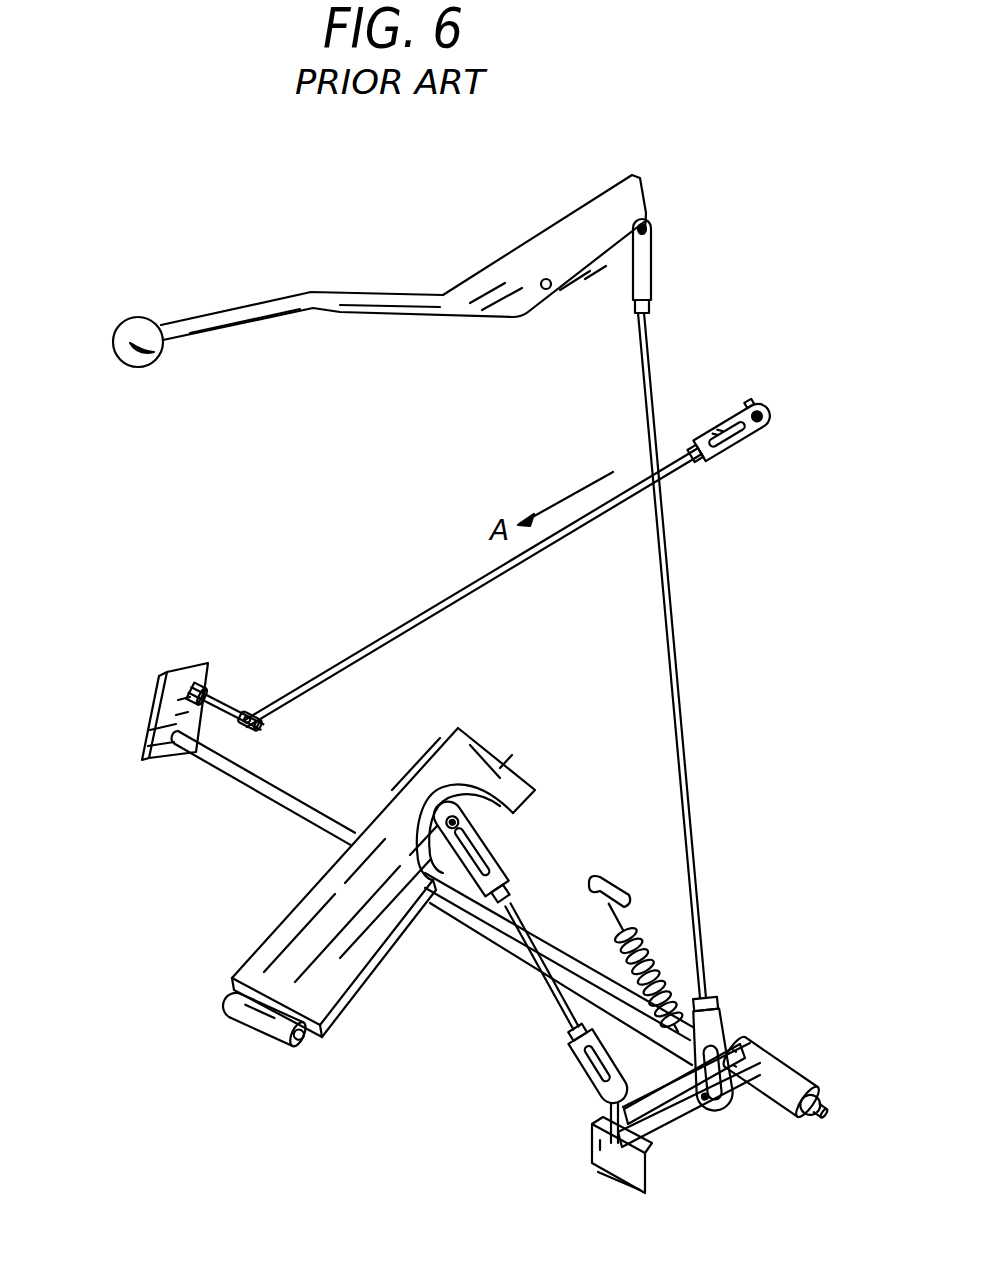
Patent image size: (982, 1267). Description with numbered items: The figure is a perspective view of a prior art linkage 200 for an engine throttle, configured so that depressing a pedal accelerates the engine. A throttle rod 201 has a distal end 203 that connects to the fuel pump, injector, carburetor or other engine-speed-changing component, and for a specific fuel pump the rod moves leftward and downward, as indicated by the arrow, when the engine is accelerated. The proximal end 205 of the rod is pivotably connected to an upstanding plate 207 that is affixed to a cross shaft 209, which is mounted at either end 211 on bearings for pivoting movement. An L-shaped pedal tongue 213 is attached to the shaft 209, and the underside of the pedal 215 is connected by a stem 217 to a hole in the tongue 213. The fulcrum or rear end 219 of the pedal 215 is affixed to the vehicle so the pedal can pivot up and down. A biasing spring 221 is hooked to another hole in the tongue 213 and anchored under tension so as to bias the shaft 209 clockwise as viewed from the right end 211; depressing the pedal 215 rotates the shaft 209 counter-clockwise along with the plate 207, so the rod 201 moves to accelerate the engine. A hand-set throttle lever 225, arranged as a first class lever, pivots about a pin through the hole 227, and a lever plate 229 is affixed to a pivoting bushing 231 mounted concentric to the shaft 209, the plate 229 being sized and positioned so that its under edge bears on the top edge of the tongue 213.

The prior art linkage 200 is at (338, 592).
The throttle rod 201 is at (438, 598).
The distal end 203 is at (717, 410).
The proximal end 205 is at (230, 712).
The upstanding plate 207 is at (170, 670).
The cross shaft 209 is at (278, 778).
The end 211 is at (828, 1123).
The pedal tongue 213 is at (673, 1063).
The pedal 215 is at (478, 733).
The stem 217 is at (518, 915).
The rear end 219 is at (320, 1028).
The biasing spring 221 is at (643, 940).
The hand-set throttle lever 225 is at (390, 300).
The hole 227 is at (549, 290).
The lever plate 229 is at (657, 1130).
The pivoting bushing 231 is at (768, 1052).